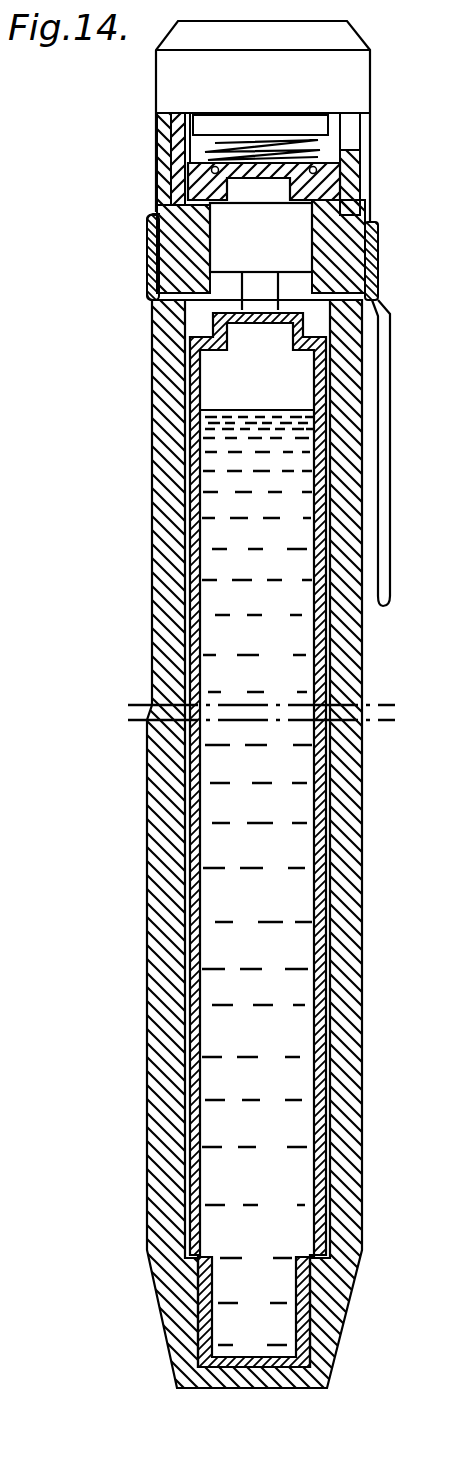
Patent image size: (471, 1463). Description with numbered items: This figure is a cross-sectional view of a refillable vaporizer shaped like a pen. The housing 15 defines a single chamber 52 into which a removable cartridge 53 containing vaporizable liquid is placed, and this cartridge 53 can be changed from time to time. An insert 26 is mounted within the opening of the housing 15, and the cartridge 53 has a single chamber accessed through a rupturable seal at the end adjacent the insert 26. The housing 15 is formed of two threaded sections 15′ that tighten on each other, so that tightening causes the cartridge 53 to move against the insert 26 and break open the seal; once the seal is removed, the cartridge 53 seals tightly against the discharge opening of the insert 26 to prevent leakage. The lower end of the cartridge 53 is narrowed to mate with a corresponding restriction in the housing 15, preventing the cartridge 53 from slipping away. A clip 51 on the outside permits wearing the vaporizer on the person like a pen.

The housing 15 is at (376, 1056).
The threaded section 15′ is at (155, 277).
The insert 26 is at (150, 237).
The clip 51 is at (385, 347).
The single chamber 52 is at (320, 908).
The removable cartridge 53 is at (325, 838).